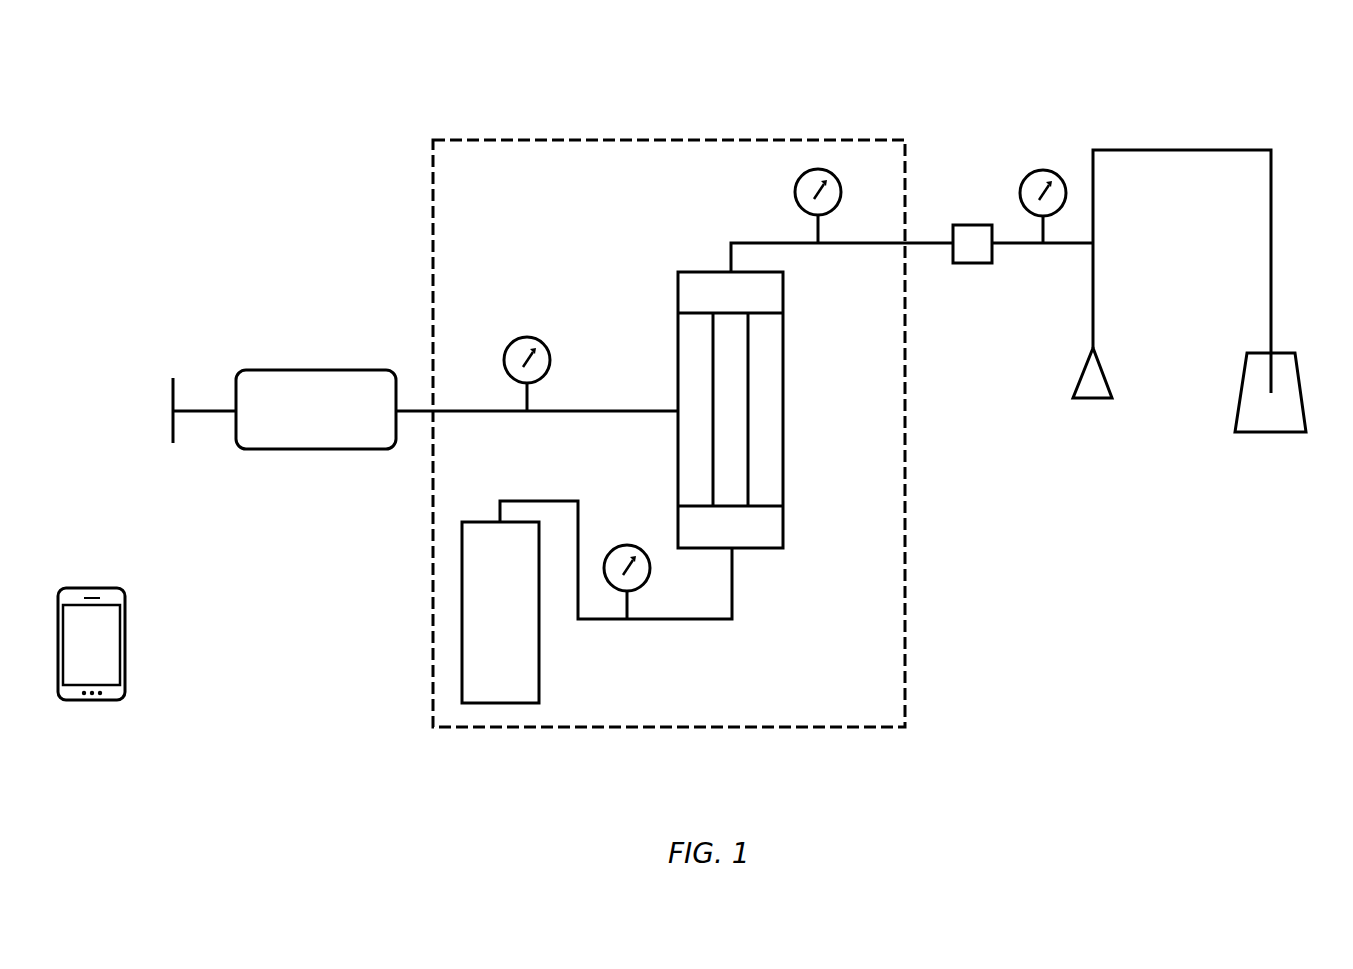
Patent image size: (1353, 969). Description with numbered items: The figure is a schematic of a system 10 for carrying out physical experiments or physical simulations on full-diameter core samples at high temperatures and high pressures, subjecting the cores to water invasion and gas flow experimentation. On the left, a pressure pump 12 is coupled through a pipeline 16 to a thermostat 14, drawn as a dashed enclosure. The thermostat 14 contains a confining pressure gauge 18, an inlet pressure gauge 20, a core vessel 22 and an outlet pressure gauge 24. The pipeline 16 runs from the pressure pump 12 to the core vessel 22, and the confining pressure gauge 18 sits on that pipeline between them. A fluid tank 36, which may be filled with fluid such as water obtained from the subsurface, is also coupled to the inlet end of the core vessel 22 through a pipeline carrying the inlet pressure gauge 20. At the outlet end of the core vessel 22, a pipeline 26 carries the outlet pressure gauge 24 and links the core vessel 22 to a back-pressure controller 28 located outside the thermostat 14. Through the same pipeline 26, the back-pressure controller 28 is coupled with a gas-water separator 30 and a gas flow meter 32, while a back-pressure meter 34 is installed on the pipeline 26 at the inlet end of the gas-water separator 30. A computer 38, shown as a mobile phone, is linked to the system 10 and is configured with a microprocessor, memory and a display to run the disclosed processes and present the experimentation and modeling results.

The system 10 is at (398, 72).
The pressure pump 12 is at (325, 370).
The thermostat 14 is at (905, 638).
The pipeline 16 is at (482, 411).
The confining pressure gauge 18 is at (551, 357).
The inlet pressure gauge 20 is at (648, 580).
The core vessel 22 is at (783, 444).
The outlet pressure gauge 24 is at (796, 195).
The pipeline 26 is at (878, 243).
The back-pressure controller 28 is at (972, 263).
The gas-water separator 30 is at (1093, 398).
The gas flow meter 32 is at (1266, 432).
The back-pressure meter 34 is at (1043, 170).
The fluid tank 36 is at (539, 665).
The computer 38 is at (125, 600).